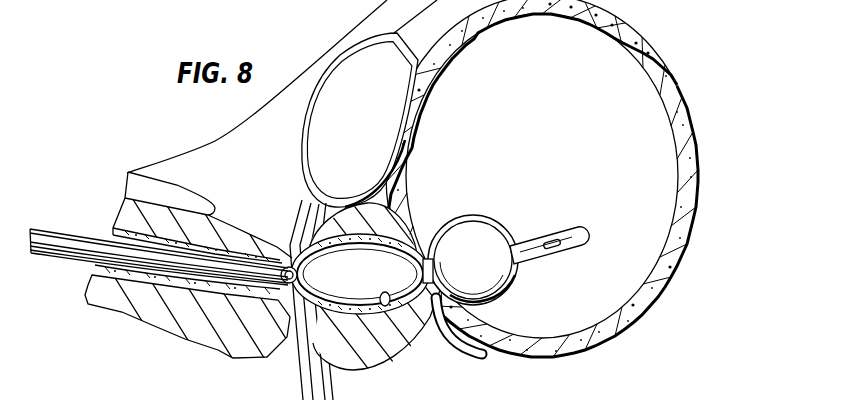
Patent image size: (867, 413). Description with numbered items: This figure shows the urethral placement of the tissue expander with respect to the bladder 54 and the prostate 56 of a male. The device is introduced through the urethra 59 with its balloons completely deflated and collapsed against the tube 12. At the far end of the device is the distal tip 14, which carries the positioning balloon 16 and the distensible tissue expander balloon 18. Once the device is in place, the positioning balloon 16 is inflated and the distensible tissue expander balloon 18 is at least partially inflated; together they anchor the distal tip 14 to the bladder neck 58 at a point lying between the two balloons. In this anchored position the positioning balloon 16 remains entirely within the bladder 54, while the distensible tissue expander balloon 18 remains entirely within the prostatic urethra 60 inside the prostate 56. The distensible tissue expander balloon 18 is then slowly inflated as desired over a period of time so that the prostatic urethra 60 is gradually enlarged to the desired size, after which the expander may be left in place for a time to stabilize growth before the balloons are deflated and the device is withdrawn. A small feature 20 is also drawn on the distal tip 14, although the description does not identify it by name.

The tube 12 is at (75, 258).
The distal tip 14 is at (568, 222).
The positioning balloon 16 is at (508, 222).
The distensible tissue expander balloon 18 is at (380, 287).
The connector slot 20 is at (563, 250).
The bladder 54 is at (686, 240).
The prostate 56 is at (366, 238).
The bladder neck 58 is at (432, 262).
The urethra 59 is at (112, 232).
The prostatic urethra 60 is at (386, 308).